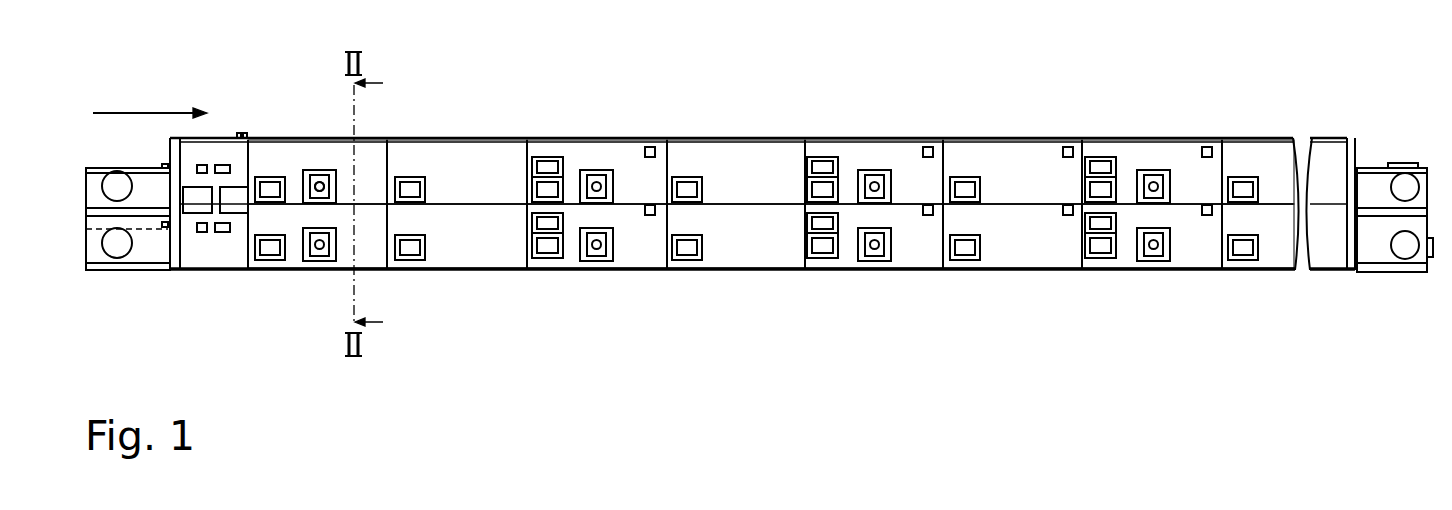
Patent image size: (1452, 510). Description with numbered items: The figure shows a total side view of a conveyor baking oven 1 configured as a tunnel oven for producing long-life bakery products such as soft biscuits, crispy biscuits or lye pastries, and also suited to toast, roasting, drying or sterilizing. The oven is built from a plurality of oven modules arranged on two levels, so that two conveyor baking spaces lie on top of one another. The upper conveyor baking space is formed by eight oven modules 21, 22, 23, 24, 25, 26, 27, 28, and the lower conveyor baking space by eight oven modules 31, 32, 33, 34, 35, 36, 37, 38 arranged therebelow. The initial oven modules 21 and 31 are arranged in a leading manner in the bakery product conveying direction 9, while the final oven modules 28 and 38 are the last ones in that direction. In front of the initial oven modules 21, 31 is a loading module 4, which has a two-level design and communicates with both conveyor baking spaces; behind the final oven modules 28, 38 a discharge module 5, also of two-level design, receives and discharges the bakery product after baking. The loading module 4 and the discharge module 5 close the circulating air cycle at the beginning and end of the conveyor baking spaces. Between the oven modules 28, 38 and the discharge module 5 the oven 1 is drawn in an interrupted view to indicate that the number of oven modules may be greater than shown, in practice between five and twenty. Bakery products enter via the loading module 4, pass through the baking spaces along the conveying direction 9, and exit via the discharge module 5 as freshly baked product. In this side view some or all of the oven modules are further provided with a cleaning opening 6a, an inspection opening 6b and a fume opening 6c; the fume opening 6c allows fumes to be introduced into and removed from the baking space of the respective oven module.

The conveyor baking oven 1 is at (813, 100).
The loading module 4 is at (250, 310).
The discharge module 5 is at (1428, 310).
The bakery product conveying direction 9 is at (146, 113).
The cleaning opening 6a is at (268, 185).
The inspection opening 6b is at (552, 162).
The fume opening 6c is at (930, 147).
The initial oven module of lower conveyor baking space 31 is at (316, 185).
The initial oven module of upper conveyor baking space 21 is at (385, 150).
The oven module 22 is at (515, 150).
The oven module 23 is at (630, 152).
The oven module 24 is at (753, 153).
The oven module 25 is at (855, 152).
The oven module 26 is at (1032, 153).
The oven module 27 is at (1173, 153).
The oven module 28 is at (1275, 153).
The oven module 32 is at (511, 253).
The oven module 33 is at (624, 252).
The oven module 34 is at (746, 252).
The oven module 35 is at (917, 253).
The oven module 36 is at (1027, 252).
The oven module 37 is at (1167, 252).
The oven module 38 is at (1268, 252).